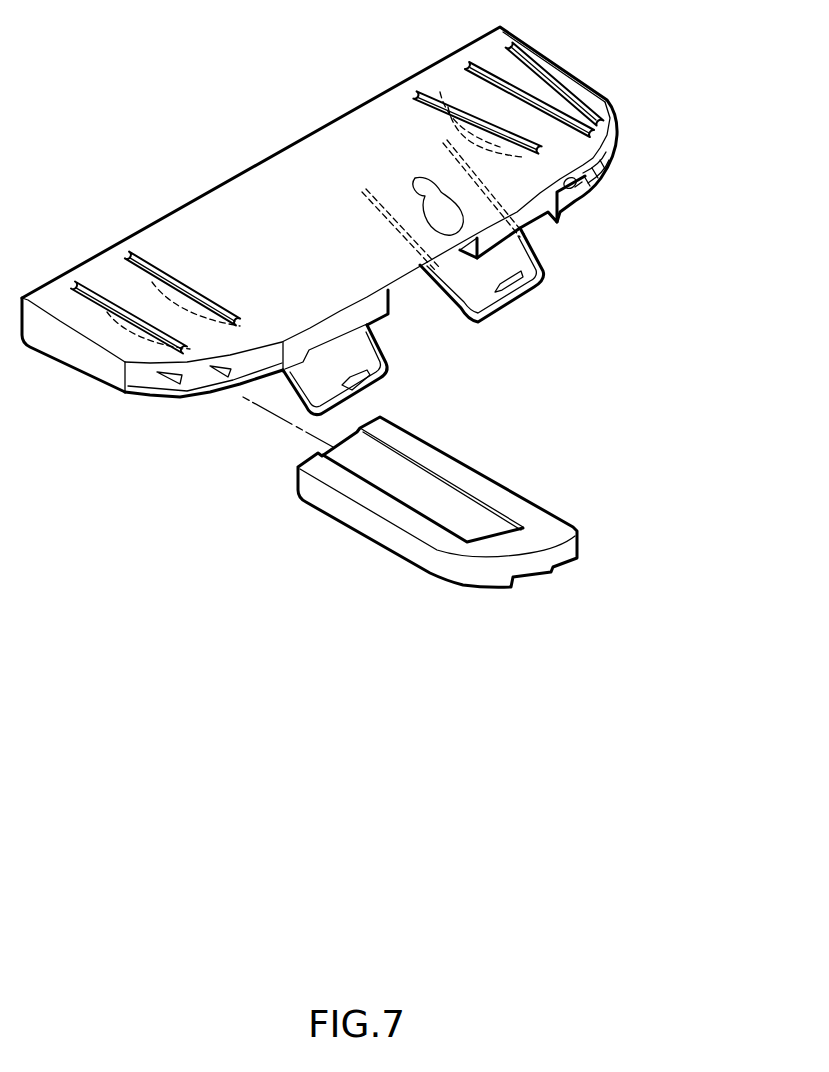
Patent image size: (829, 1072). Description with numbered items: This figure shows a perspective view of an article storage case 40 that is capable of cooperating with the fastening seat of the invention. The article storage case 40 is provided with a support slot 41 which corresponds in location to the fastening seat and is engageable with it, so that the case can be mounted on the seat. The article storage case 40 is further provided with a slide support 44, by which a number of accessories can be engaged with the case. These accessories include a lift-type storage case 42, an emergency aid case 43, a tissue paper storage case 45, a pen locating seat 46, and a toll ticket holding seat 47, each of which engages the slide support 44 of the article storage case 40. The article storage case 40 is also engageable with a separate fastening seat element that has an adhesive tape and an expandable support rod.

The article storage case 40 is at (242, 197).
The support slot 41 is at (412, 277).
The lift-type storage case 42 is at (310, 392).
The emergency aid case 43 is at (437, 538).
The slide support 44 is at (160, 378).
The tissue paper storage case 45 is at (525, 263).
The pen locating seat 46 is at (577, 188).
The toll ticket holding seat 47 is at (615, 153).